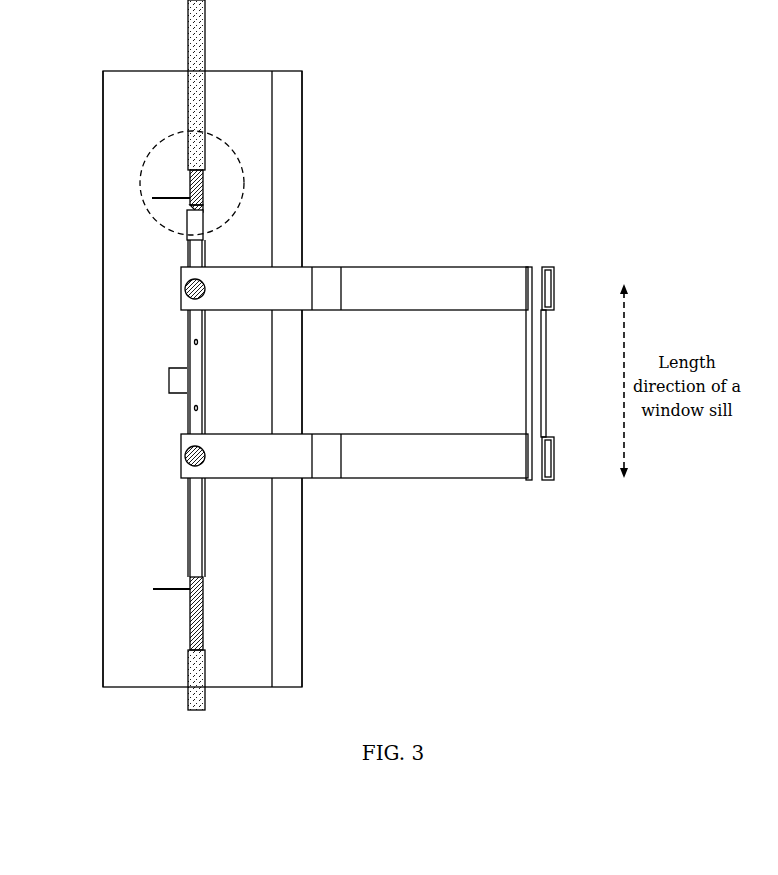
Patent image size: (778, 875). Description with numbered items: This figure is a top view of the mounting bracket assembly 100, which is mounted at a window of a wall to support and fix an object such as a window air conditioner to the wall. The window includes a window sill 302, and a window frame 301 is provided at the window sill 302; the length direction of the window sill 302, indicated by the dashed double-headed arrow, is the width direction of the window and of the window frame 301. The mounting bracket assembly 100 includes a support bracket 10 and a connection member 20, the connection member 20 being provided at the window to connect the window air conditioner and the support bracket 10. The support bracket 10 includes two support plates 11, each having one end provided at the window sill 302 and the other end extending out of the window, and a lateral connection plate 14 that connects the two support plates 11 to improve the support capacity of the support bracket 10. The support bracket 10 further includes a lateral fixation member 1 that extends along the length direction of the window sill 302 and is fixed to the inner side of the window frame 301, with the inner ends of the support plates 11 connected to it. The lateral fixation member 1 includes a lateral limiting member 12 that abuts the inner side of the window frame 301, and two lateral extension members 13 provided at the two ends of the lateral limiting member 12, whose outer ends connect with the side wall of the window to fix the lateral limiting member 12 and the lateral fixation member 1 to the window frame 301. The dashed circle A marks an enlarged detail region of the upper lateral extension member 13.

The mounting bracket assembly 100 is at (372, 168).
The lateral fixation member 1 is at (188, 332).
The support bracket 10 is at (502, 468).
The support plate 11 is at (424, 281).
The lateral limiting member 12 is at (172, 515).
The lateral extension member 13 is at (190, 28).
The lateral connection plate 14 is at (532, 375).
The connection member 20 is at (152, 588).
The window frame 301 is at (228, 614).
The window sill 302 is at (142, 450).
The detail region A is at (140, 178).